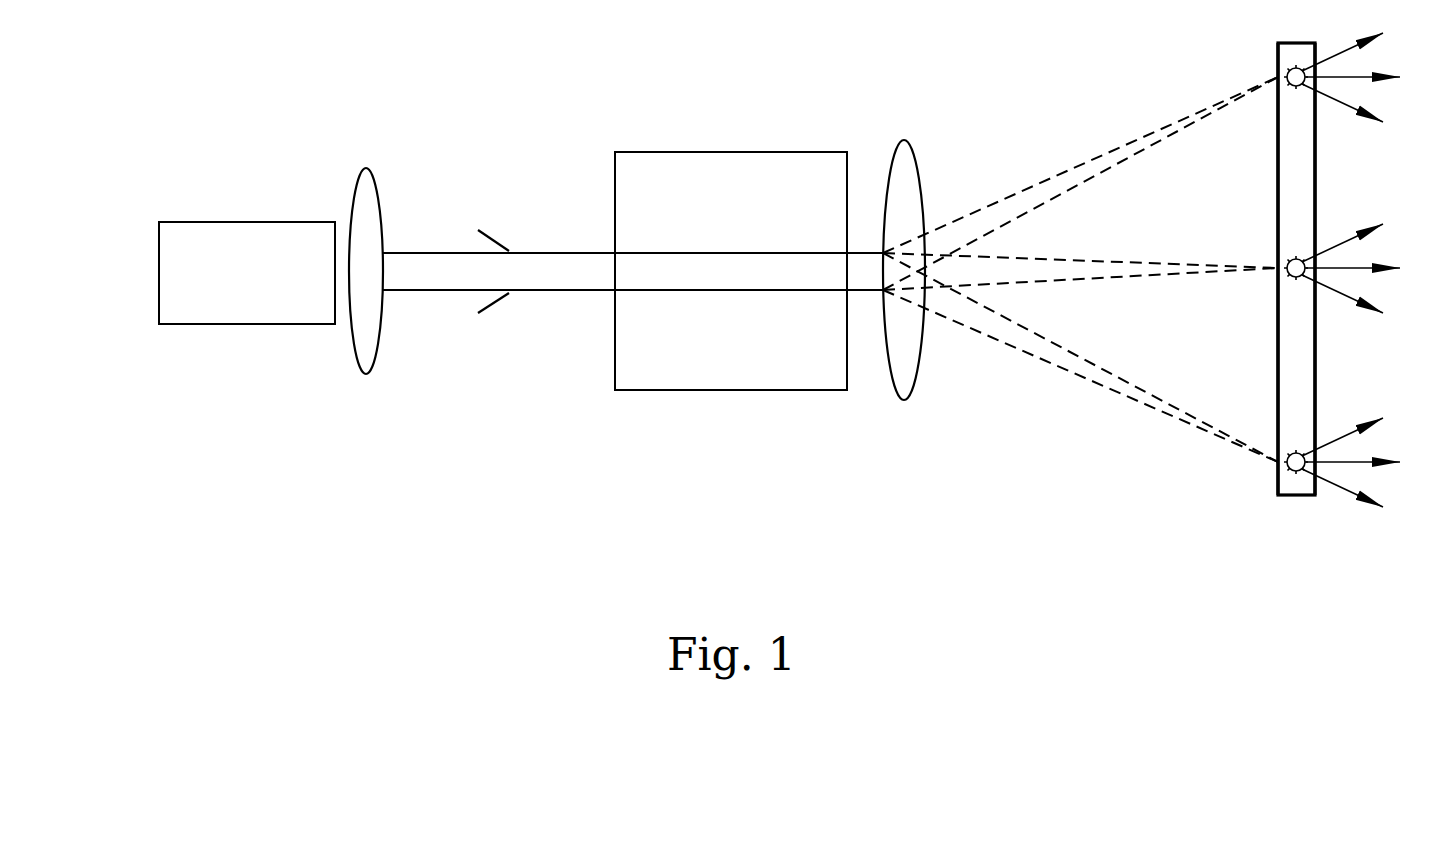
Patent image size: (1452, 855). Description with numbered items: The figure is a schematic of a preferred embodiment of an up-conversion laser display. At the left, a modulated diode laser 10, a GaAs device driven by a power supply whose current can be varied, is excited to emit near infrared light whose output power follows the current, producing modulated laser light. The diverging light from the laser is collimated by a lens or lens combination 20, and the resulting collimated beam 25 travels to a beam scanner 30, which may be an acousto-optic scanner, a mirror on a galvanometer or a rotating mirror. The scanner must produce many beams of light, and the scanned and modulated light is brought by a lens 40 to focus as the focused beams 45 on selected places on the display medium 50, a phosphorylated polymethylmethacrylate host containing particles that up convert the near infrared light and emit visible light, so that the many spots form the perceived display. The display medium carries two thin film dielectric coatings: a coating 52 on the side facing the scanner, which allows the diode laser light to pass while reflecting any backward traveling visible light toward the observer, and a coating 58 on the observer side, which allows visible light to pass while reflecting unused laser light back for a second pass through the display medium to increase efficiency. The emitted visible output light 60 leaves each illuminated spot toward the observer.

The modulated diode laser 10 is at (260, 281).
The lens or lens combination 20 is at (367, 195).
The collimated beam 25 is at (583, 270).
The beam scanner 30 is at (750, 213).
The lens 40 is at (902, 168).
The focused beams 45 is at (1095, 160).
The display medium 50 is at (1293, 417).
The coating 52 is at (1278, 340).
The coating 58 is at (1315, 340).
The output light 60 is at (1366, 270).